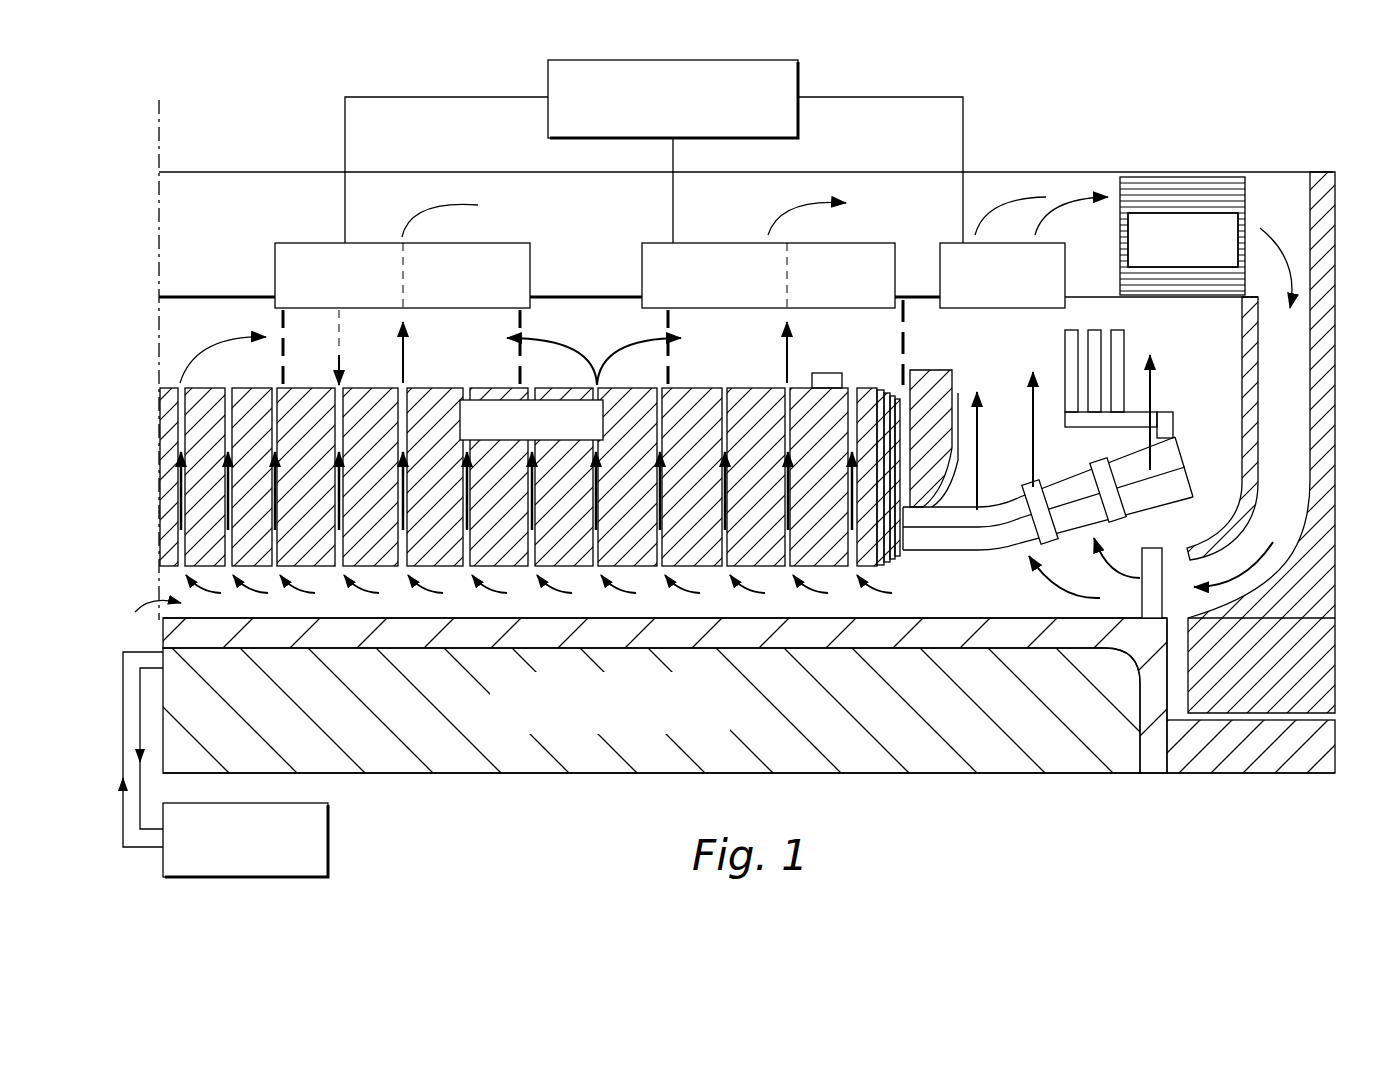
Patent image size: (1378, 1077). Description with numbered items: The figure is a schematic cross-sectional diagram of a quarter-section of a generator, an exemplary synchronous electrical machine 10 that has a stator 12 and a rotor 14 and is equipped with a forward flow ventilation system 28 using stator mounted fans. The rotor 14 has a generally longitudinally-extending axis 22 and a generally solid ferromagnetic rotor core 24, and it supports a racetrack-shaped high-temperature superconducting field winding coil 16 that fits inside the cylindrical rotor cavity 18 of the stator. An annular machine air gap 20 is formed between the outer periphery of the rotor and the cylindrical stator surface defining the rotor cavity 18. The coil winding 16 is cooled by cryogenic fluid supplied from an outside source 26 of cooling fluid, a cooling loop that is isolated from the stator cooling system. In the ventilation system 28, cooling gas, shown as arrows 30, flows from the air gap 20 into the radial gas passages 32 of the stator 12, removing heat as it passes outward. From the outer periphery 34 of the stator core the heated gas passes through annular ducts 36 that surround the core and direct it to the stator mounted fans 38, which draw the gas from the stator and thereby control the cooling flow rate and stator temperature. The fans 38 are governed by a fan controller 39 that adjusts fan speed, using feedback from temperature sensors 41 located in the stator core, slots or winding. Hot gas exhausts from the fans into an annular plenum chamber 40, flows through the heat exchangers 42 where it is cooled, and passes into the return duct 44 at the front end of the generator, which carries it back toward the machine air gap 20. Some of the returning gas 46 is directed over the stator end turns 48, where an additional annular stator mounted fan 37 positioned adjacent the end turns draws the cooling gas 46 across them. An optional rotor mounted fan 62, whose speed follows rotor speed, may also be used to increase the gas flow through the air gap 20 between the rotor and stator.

The synchronous electrical machine 10 is at (1333, 440).
The stator 12 is at (160, 532).
The rotor 14 is at (651, 732).
The field winding coil 16 is at (246, 630).
The cylindrical rotor cavity 18 is at (158, 572).
The machine air gap 20 is at (646, 628).
The axis 22 is at (886, 775).
The rotor core 24 is at (386, 748).
The source of cooling fluid 26 is at (236, 867).
The forward flow ventilation system 28 is at (155, 336).
The cooling gas 30 is at (418, 590).
The radial gas passages 32 is at (182, 425).
The outer periphery of the stator core 34 is at (178, 387).
The annular ducts 36 is at (222, 311).
The annular stator mounted fan 37 is at (978, 308).
The stator mounted fans 38 is at (275, 270).
The fan controller 39 is at (661, 125).
The plenum chamber 40 is at (566, 185).
The temperature sensors 41 is at (834, 372).
The heat exchanger 42 is at (1172, 177).
The return duct 44 is at (1296, 358).
The cooling gas 46 is at (980, 462).
The stator end turns 48 is at (1176, 470).
The rotor mounted fan 62 is at (1163, 600).